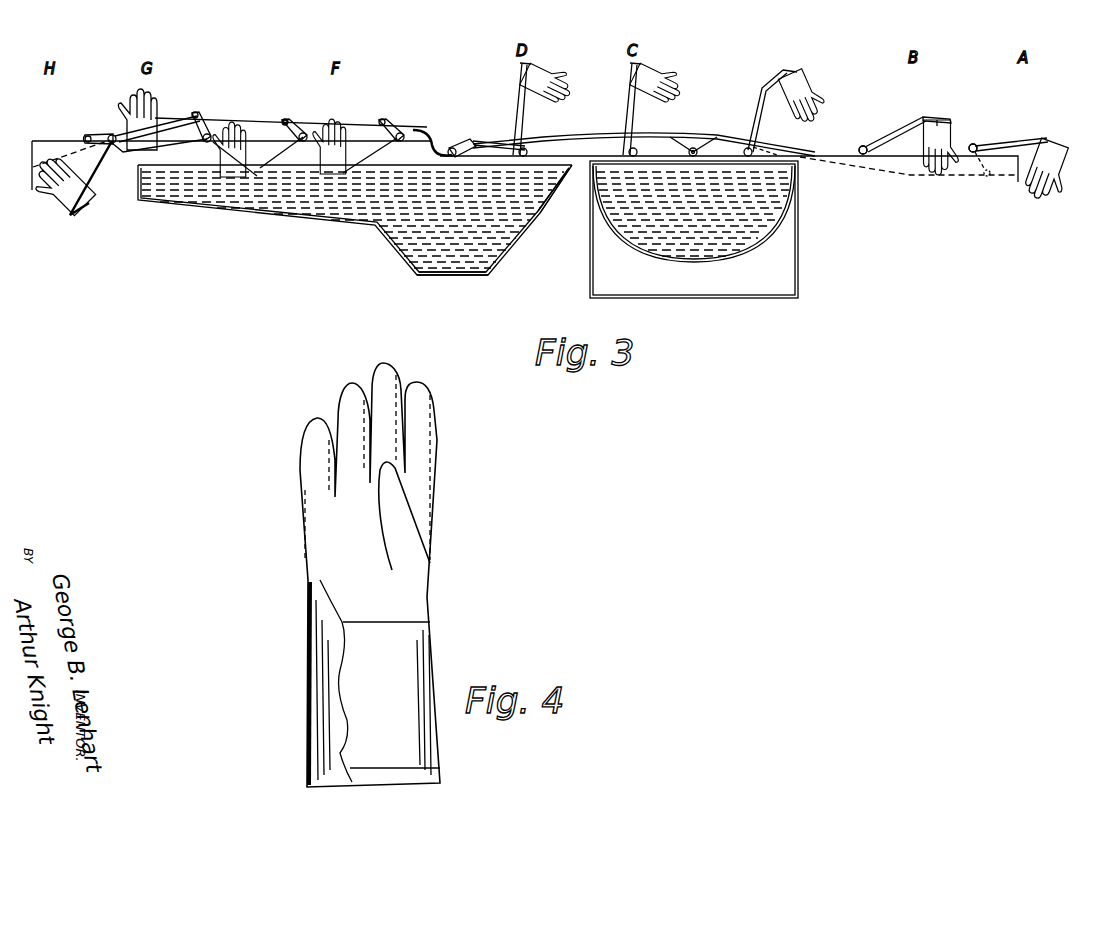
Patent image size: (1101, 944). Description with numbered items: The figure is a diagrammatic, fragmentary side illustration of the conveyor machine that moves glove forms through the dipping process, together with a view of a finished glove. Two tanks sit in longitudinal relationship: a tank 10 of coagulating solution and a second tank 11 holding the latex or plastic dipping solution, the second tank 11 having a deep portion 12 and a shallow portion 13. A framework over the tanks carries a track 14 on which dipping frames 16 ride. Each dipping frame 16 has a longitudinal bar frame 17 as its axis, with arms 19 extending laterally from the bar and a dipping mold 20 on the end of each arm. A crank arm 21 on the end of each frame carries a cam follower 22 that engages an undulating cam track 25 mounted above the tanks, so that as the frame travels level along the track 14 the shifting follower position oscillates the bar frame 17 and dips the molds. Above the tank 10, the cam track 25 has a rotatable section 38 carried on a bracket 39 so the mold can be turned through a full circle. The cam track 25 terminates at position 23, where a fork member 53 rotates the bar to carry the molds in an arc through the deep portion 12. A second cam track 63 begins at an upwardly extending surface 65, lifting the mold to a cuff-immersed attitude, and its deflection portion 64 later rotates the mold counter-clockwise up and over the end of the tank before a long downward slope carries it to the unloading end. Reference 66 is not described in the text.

The tank 10 is at (793, 212).
The second tank 11 is at (526, 229).
The deep portion 12 is at (443, 280).
The shallow portion 13 is at (258, 207).
The track 14 is at (846, 149).
The dipping frame 16 is at (912, 122).
The longitudinal bar frame 17 is at (975, 146).
The arm 19 is at (923, 117).
The dipping mold 20 is at (957, 130).
The crank arm 21 is at (308, 126).
The cam follower 22 is at (293, 124).
The termination position of cam track 23 is at (482, 140).
The cam track 25 is at (590, 133).
The rotatable section 38 is at (693, 137).
The bracket 39 is at (720, 145).
The fork member 53 is at (453, 147).
The second cam track 63 is at (67, 150).
The deflection portion 64 is at (217, 117).
The beginning of cam track 65 is at (425, 137).
The pivot pin 66 is at (285, 120).